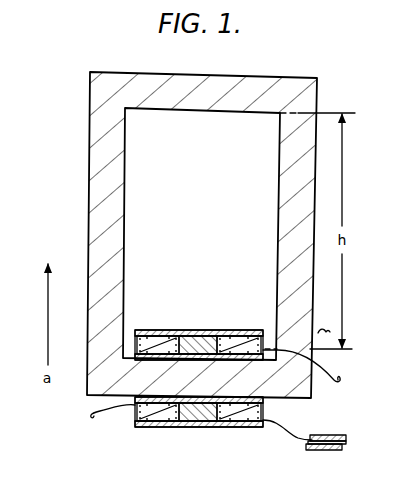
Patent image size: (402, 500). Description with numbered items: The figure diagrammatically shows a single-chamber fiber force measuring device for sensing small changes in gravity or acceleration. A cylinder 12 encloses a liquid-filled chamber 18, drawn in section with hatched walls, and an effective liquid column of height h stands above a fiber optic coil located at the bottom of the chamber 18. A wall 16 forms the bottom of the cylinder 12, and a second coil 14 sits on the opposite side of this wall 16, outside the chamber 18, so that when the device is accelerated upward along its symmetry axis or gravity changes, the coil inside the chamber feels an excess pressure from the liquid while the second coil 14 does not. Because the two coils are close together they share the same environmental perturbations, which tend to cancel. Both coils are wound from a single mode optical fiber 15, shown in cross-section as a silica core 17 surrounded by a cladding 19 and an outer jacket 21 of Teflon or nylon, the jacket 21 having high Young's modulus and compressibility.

The cylinder 12 is at (289, 71).
The second coil 14 is at (133, 417).
The fiber 15 is at (354, 445).
The wall 16 is at (289, 399).
The core 17 is at (346, 443).
The liquid-filled chamber 18 is at (208, 232).
The cladding 19 is at (346, 438).
The jacket 21 is at (340, 452).